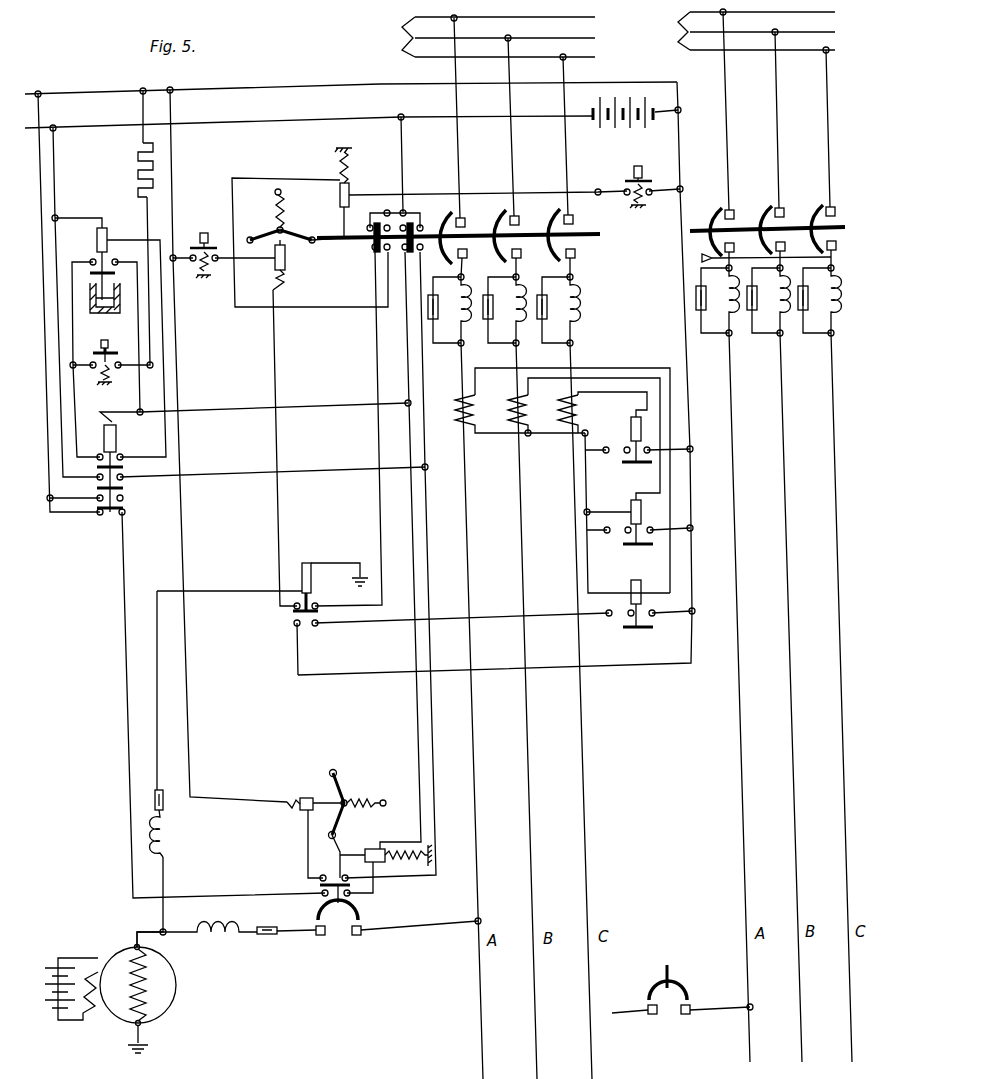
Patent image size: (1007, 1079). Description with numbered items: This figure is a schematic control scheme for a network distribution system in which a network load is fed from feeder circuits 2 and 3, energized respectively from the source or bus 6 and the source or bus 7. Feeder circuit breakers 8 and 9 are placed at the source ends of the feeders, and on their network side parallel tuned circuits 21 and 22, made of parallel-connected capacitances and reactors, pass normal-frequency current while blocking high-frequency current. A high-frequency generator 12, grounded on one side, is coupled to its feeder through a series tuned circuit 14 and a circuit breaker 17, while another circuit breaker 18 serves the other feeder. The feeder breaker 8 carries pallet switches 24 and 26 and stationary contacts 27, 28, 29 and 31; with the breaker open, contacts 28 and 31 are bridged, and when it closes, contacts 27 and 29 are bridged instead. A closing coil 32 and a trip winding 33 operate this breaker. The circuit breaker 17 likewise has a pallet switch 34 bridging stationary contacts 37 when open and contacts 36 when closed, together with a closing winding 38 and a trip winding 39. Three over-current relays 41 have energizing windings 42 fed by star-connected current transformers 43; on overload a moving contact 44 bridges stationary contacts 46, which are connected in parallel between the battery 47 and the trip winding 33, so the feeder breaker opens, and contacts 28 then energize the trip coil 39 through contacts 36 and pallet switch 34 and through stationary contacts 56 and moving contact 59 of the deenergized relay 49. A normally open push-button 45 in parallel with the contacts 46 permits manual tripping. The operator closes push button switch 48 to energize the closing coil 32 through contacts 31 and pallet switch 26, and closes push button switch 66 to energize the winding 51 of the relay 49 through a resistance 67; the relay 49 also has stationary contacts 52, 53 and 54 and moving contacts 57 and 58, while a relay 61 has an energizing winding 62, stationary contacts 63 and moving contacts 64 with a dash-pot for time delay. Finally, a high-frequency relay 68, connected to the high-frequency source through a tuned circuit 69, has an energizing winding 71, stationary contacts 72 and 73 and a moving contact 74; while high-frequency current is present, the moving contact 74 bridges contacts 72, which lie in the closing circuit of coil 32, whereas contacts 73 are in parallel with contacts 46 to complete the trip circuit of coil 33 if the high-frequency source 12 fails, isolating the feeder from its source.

The feeder circuit 2 is at (573, 273).
The feeder circuit 3 is at (760, 259).
The source or bus 6 is at (489, 37).
The source or bus 7 is at (749, 31).
The feeder circuit breaker 8 is at (562, 232).
The feeder circuit breaker 9 is at (824, 231).
The high-frequency generator 12 is at (206, 975).
The tuned circuit 14 is at (240, 928).
The circuit breaker 17 is at (360, 909).
The circuit breaker 18 is at (675, 982).
The parallel tuned circuit 21 is at (528, 350).
The parallel tuned circuit 22 is at (791, 340).
The pallet switch 24 is at (423, 251).
The pallet switch 26 is at (372, 251).
The stationary contacts 27 is at (423, 226).
The stationary contacts 28 is at (406, 222).
The stationary contacts 29 is at (388, 210).
The stationary contacts 31 is at (373, 228).
The closing coil 32 is at (286, 264).
The trip winding 33 is at (340, 190).
The pallet switch 34 is at (322, 896).
The stationary contacts 36 is at (351, 894).
The stationary contacts 37 is at (320, 884).
The closing winding 38 is at (306, 798).
The trip winding 39 is at (378, 849).
The over-current relay 41 is at (623, 448).
The energizing winding 42 is at (631, 583).
The current transformers 43 is at (540, 437).
The moving contact 44 is at (640, 628).
The push-button 45 is at (625, 181).
The stationary contacts 46 is at (656, 611).
The battery 47 is at (637, 146).
The push button switch 48 is at (209, 247).
The relay 49 is at (140, 445).
The energizing winding 51 is at (109, 409).
The stationary contacts 52 is at (124, 459).
The stationary contacts 53 is at (124, 479).
The stationary contacts 54 is at (124, 499).
The stationary contacts 56 is at (125, 514).
The moving contact 57 is at (97, 467).
The moving contact 58 is at (97, 488).
The moving contact 59 is at (97, 508).
The relay 61 is at (80, 253).
The energizing winding 62 is at (108, 229).
The stationary contacts 63 is at (113, 263).
The moving contacts 64 is at (96, 298).
The push button switch 66 is at (108, 345).
The resistance 67 is at (138, 168).
The high-frequency relay 68 is at (340, 593).
The tuned circuit 69 is at (166, 829).
The energizing winding 71 is at (300, 568).
The stationary contacts 72 is at (294, 607).
The stationary contacts 73 is at (294, 625).
The moving contact 74 is at (319, 607).